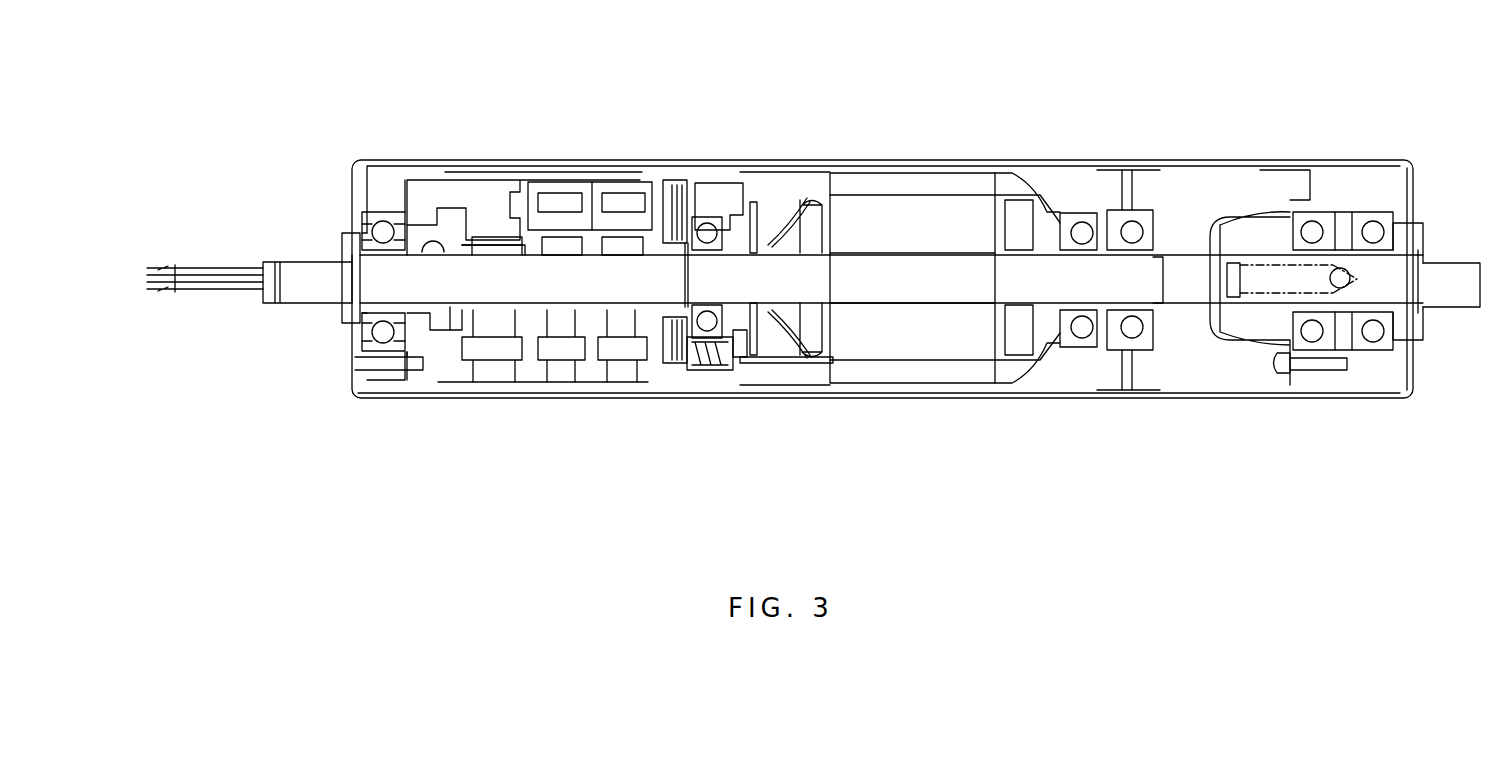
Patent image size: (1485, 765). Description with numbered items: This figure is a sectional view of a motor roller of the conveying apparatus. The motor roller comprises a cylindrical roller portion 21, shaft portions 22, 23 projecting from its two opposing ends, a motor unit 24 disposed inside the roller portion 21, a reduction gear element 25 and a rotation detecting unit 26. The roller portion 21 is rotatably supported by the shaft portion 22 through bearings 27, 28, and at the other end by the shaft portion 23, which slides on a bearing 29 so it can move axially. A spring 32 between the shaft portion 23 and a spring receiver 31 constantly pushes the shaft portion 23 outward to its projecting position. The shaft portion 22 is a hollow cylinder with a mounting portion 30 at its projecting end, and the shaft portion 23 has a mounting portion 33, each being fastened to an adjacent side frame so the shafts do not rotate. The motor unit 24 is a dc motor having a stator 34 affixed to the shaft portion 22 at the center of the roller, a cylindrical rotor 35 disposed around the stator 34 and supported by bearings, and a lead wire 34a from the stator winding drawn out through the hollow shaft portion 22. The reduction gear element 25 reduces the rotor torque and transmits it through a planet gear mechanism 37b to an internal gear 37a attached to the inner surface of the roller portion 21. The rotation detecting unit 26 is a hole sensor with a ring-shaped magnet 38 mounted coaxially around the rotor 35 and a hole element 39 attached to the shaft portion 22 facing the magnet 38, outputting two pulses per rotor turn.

The roller portion 21 is at (831, 165).
The shaft portion 22 is at (300, 307).
The shaft portion 23 is at (1460, 308).
The motor unit 24 is at (975, 165).
The reduction gear element 25 is at (560, 190).
The rotation detecting unit 26 is at (767, 363).
The bearing 27 is at (360, 213).
The bearing 28 is at (1148, 213).
The bearing 29 is at (1325, 213).
The mounting portion 30 is at (290, 262).
The spring receiver 31 is at (1215, 340).
The spring 32 is at (1240, 260).
The mounting portion 33 is at (1460, 265).
The stator 34 is at (900, 242).
The lead wire 34a is at (192, 293).
The rotor 35 is at (915, 173).
The internal gear 37a is at (505, 165).
The planet gear mechanism 37b is at (620, 180).
The magnet 38 is at (732, 333).
The hole element 39 is at (740, 353).